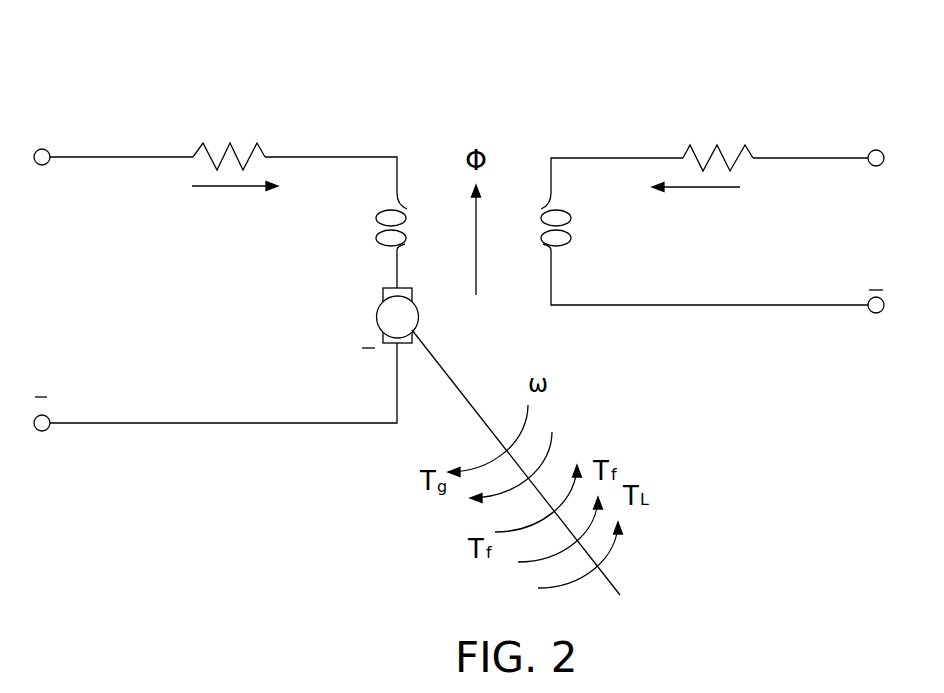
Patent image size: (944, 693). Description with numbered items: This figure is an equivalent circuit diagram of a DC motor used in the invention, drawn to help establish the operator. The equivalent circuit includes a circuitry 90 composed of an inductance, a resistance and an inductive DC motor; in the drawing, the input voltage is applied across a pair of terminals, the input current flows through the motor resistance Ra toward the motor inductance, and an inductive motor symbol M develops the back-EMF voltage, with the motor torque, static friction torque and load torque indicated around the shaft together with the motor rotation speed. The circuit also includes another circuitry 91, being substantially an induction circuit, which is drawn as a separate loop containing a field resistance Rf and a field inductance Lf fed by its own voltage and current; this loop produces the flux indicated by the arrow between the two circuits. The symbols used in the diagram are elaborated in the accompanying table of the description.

The circuitry 90 is at (213, 67).
The circuitry 91 is at (713, 75).
The motor resistance Ra is at (229, 131).
The DC motor M is at (398, 315).
The field resistance Rf is at (718, 133).
The field inductance Lf is at (575, 222).